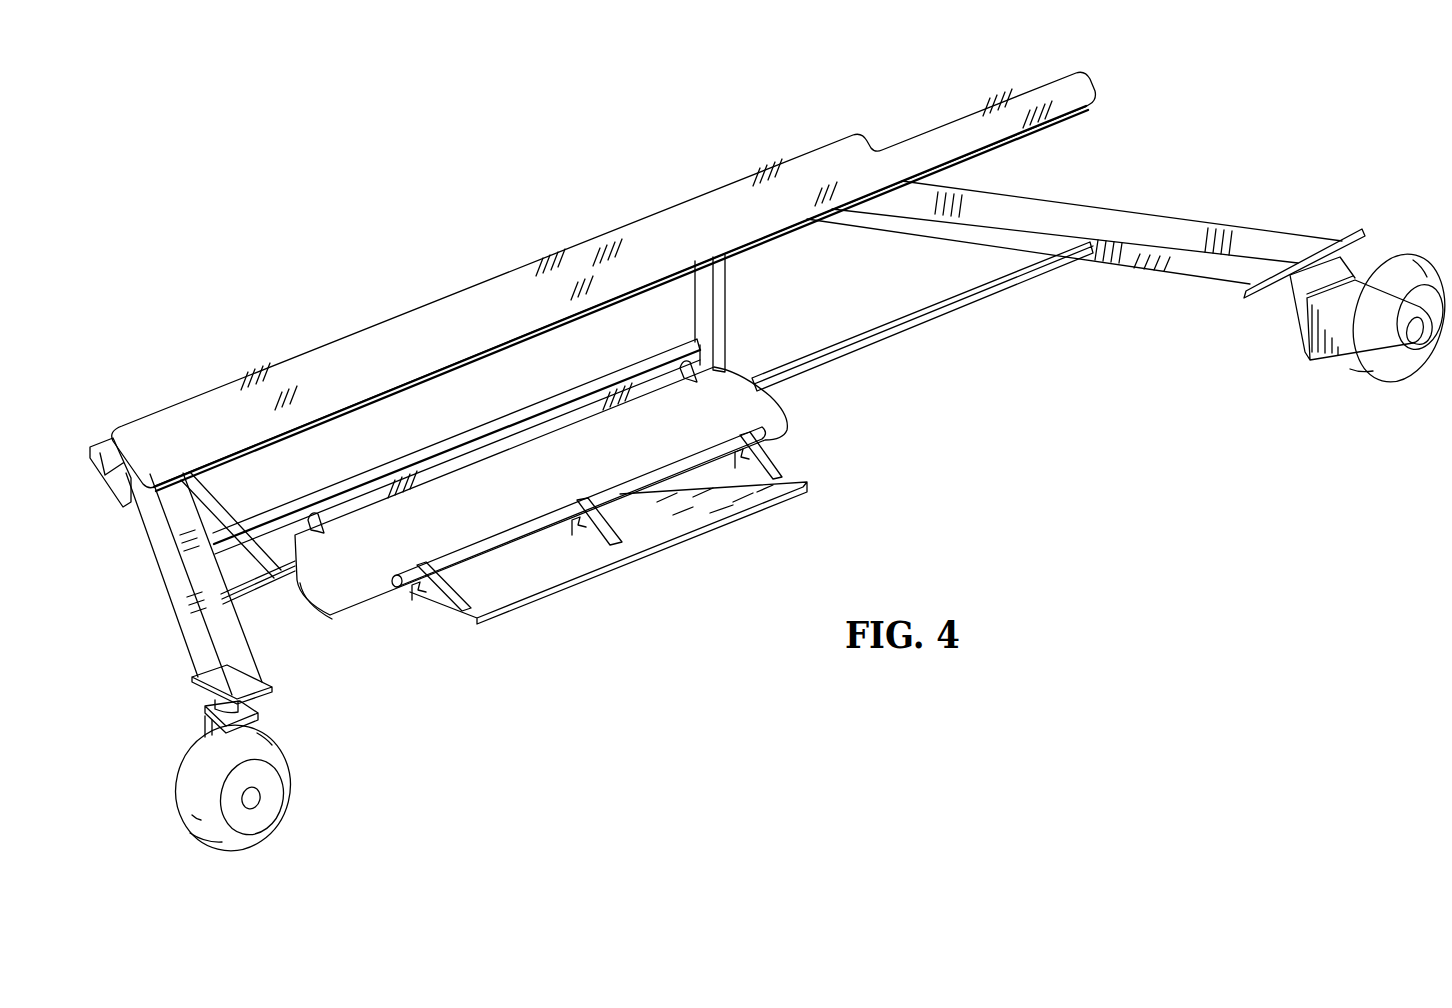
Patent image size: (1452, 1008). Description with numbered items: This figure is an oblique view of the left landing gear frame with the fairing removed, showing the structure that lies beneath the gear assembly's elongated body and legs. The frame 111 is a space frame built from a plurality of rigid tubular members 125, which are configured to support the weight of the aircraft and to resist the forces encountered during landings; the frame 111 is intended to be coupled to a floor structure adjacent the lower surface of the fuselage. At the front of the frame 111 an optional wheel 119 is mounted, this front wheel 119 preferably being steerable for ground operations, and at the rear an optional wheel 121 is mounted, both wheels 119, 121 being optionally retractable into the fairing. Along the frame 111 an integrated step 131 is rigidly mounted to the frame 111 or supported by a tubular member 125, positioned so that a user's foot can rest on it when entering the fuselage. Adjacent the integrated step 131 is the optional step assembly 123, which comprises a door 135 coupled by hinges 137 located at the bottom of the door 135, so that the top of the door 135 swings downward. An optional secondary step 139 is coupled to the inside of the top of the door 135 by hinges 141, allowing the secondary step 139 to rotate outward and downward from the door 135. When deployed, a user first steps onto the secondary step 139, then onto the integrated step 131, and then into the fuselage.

The frame 111 is at (490, 284).
The wheel 119 is at (288, 794).
The wheel 121 is at (1407, 248).
The step assembly 123 is at (603, 572).
The tubular member 125 is at (1178, 220).
The integrated step 131 is at (482, 435).
The door 135 is at (352, 612).
The hinges 137 is at (705, 340).
The secondary step 139 is at (681, 545).
The hinges 141 is at (779, 458).